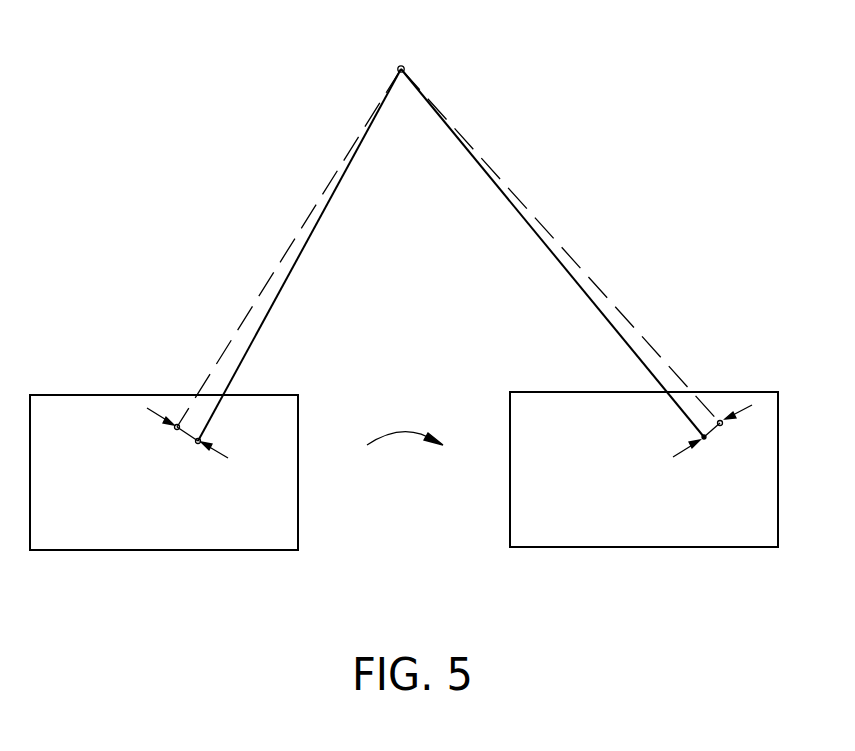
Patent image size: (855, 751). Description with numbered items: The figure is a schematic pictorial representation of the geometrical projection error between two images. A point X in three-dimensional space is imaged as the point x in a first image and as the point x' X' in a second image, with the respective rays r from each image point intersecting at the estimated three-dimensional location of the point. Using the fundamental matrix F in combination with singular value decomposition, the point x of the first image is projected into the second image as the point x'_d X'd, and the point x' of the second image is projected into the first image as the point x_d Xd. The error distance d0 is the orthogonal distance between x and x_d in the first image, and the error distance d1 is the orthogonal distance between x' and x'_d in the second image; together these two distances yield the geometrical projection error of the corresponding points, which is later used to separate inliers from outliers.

The point in 3D space X is at (300, 313).
The projected point x_d Xd is at (175, 429).
The error distance d_0 d0 is at (193, 437).
The image point x' X' is at (653, 517).
The projected point x'_d X'd is at (749, 375).
The error distance d_1 d1 is at (718, 429).
The ray r is at (276, 305).
The fundamental matrix F is at (405, 422).